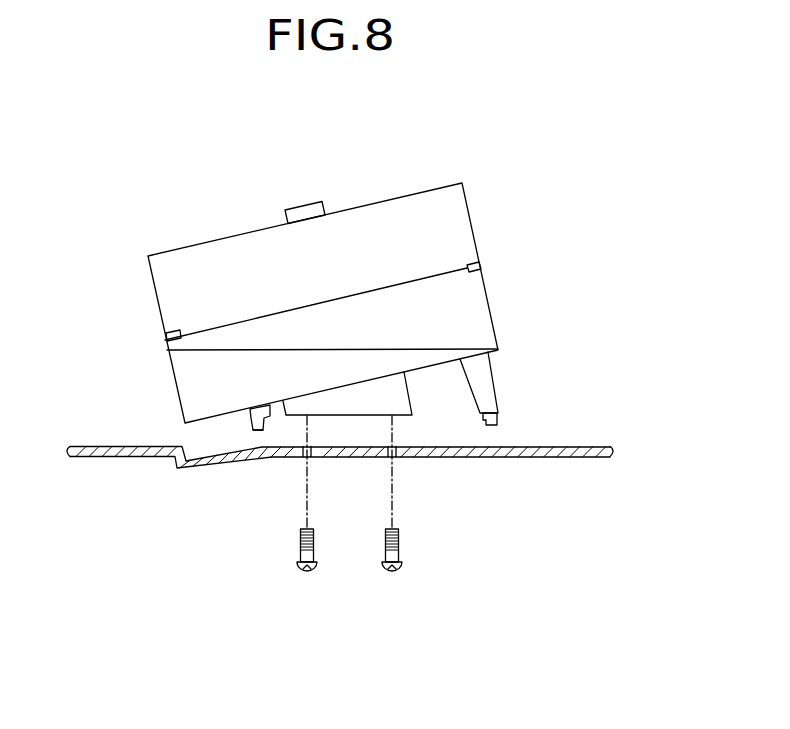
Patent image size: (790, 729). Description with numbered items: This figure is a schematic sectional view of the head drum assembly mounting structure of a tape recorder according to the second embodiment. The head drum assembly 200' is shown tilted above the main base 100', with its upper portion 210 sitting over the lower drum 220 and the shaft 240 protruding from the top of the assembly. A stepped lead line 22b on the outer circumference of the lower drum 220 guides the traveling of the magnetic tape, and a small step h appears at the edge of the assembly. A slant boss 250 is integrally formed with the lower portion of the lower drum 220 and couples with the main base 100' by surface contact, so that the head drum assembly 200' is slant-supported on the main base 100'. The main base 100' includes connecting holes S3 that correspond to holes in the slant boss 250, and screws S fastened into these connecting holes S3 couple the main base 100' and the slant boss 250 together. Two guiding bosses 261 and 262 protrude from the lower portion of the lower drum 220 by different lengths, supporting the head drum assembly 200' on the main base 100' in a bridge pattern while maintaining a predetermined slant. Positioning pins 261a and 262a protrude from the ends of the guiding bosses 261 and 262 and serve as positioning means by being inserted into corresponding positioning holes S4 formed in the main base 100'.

The head drum assembly 200' is at (634, 210).
The upper housing 210 is at (457, 221).
The lower drum 220 is at (475, 313).
The shaft 240 is at (302, 207).
The notch h is at (481, 267).
The lead line 22b is at (180, 336).
The slant boss 250 is at (400, 398).
The guiding boss 261 is at (488, 398).
The positioning pin 261a is at (497, 418).
The guiding boss 262 is at (257, 410).
The positioning pin 262a is at (252, 429).
The main base 100' is at (340, 491).
The connecting holes S3 is at (303, 458).
The positioning holes S4 is at (258, 458).
The screws S is at (392, 572).